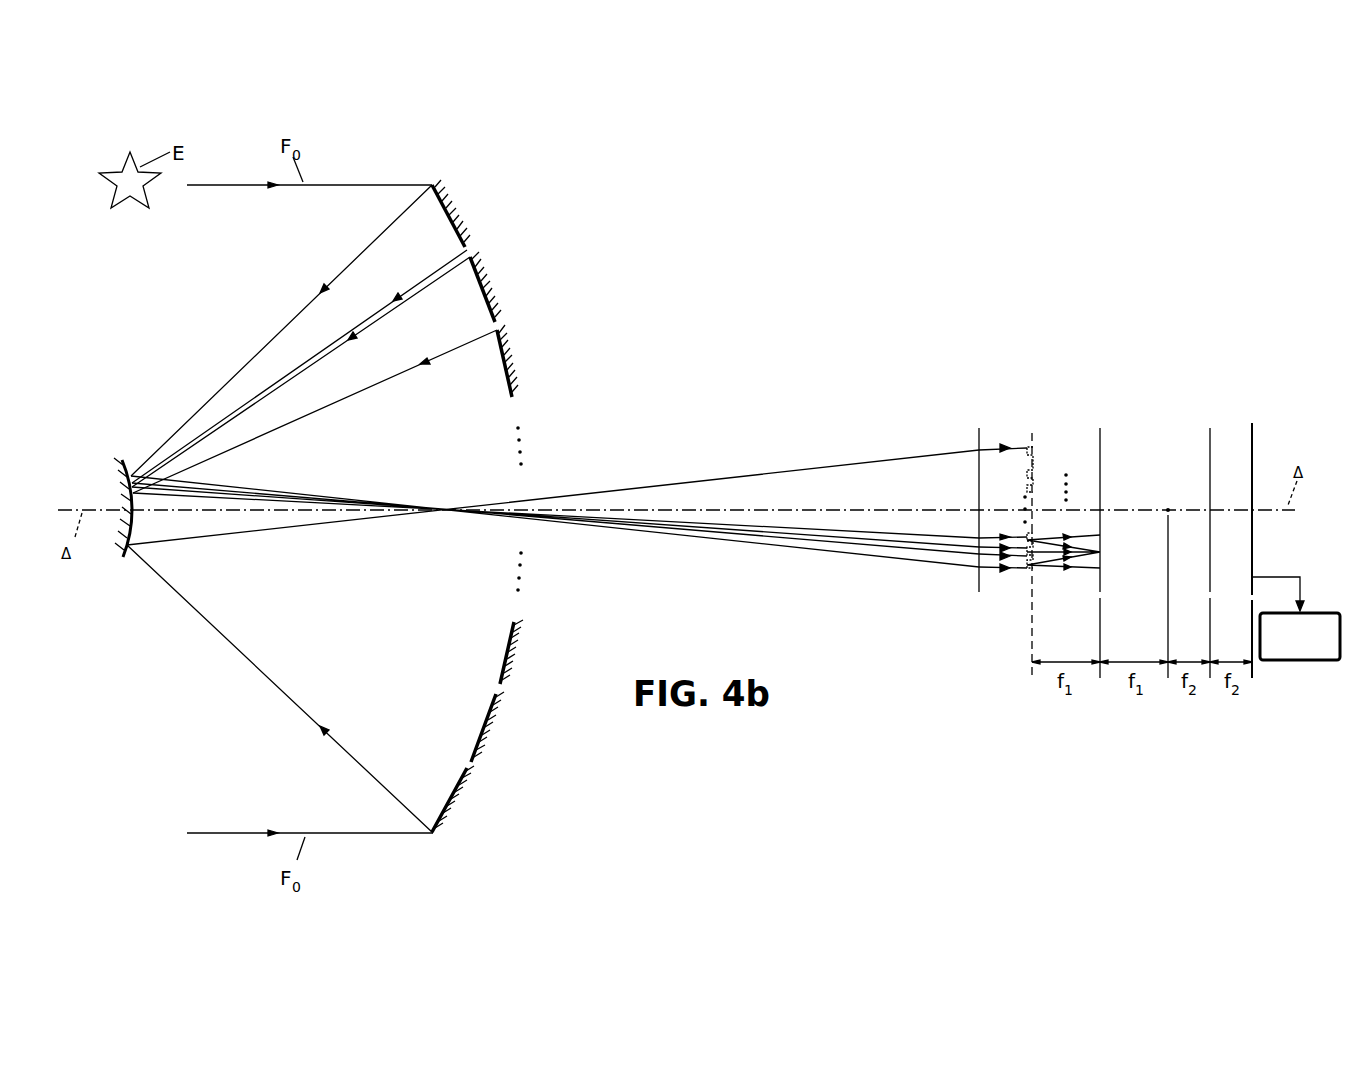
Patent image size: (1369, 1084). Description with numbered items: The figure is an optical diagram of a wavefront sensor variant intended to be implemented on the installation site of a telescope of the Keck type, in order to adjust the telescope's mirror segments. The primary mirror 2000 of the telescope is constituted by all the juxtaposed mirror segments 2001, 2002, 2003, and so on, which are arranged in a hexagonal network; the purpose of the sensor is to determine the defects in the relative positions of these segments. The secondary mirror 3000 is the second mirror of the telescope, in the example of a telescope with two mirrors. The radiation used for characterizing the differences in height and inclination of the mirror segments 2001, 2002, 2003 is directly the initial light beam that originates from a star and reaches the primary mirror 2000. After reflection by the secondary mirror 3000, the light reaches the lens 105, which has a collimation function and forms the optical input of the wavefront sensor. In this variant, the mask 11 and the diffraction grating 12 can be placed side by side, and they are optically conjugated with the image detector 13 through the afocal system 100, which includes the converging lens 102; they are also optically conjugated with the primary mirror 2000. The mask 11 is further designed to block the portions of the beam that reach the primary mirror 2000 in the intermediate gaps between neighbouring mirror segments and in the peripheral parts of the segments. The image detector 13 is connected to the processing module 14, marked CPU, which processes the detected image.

The primary mirror 2000 is at (593, 168).
The mirror segment 2001 is at (457, 211).
The mirror segment 2002 is at (490, 284).
The mirror segment 2003 is at (512, 358).
The secondary mirror 3000 is at (143, 430).
The collimation lens 105 is at (977, 443).
The mask with separate openings 11 is at (1027, 466).
The diffraction grating 12 is at (1036, 447).
The afocal system 100 is at (1210, 404).
The converging lens 102 is at (1208, 488).
The image detector 13 is at (1254, 442).
The processing module 14 is at (1317, 663).